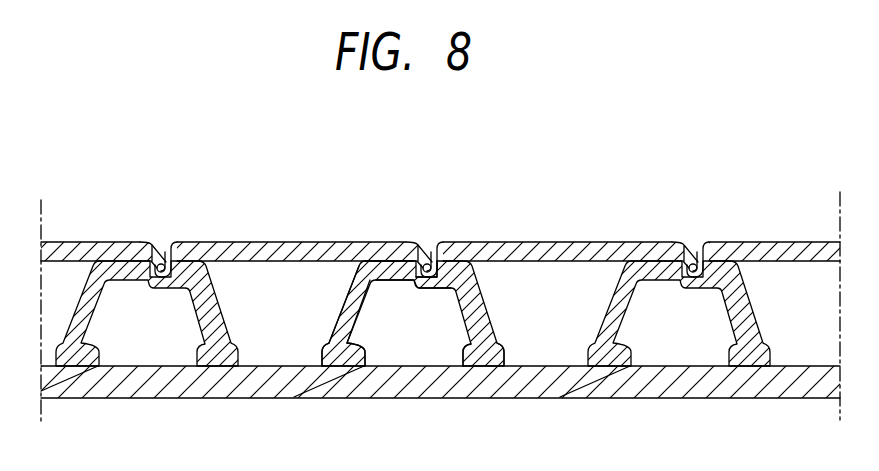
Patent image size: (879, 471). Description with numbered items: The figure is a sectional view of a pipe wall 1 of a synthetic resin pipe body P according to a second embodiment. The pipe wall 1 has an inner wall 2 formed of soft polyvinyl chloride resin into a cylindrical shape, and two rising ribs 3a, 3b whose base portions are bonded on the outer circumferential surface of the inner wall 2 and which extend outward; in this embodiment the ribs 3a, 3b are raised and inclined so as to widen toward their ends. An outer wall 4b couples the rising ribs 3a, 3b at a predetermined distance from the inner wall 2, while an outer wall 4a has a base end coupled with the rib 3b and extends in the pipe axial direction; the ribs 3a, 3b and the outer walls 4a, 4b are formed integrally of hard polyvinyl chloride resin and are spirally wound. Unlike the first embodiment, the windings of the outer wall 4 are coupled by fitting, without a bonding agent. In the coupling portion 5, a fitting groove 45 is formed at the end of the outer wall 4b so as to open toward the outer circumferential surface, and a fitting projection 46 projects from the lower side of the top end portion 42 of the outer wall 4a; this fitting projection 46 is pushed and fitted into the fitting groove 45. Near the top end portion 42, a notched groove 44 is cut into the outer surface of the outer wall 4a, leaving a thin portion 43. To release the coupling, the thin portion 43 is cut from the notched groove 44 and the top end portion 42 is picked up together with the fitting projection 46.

The pipe wall 1 is at (580, 241).
The inner wall 2 is at (668, 388).
The rising rib 3a is at (345, 352).
The rising rib 3b is at (483, 350).
The outer wall 4 is at (257, 153).
The outer wall 4a is at (267, 242).
The outer wall 4b is at (380, 263).
The coupling portion 5 is at (428, 288).
The top end portion 42 is at (170, 250).
The thin portion 43 is at (147, 256).
The notched groove 44 is at (157, 250).
The fitting groove 45 is at (458, 268).
The fitting projection 46 is at (160, 280).
The pipe body P is at (697, 240).